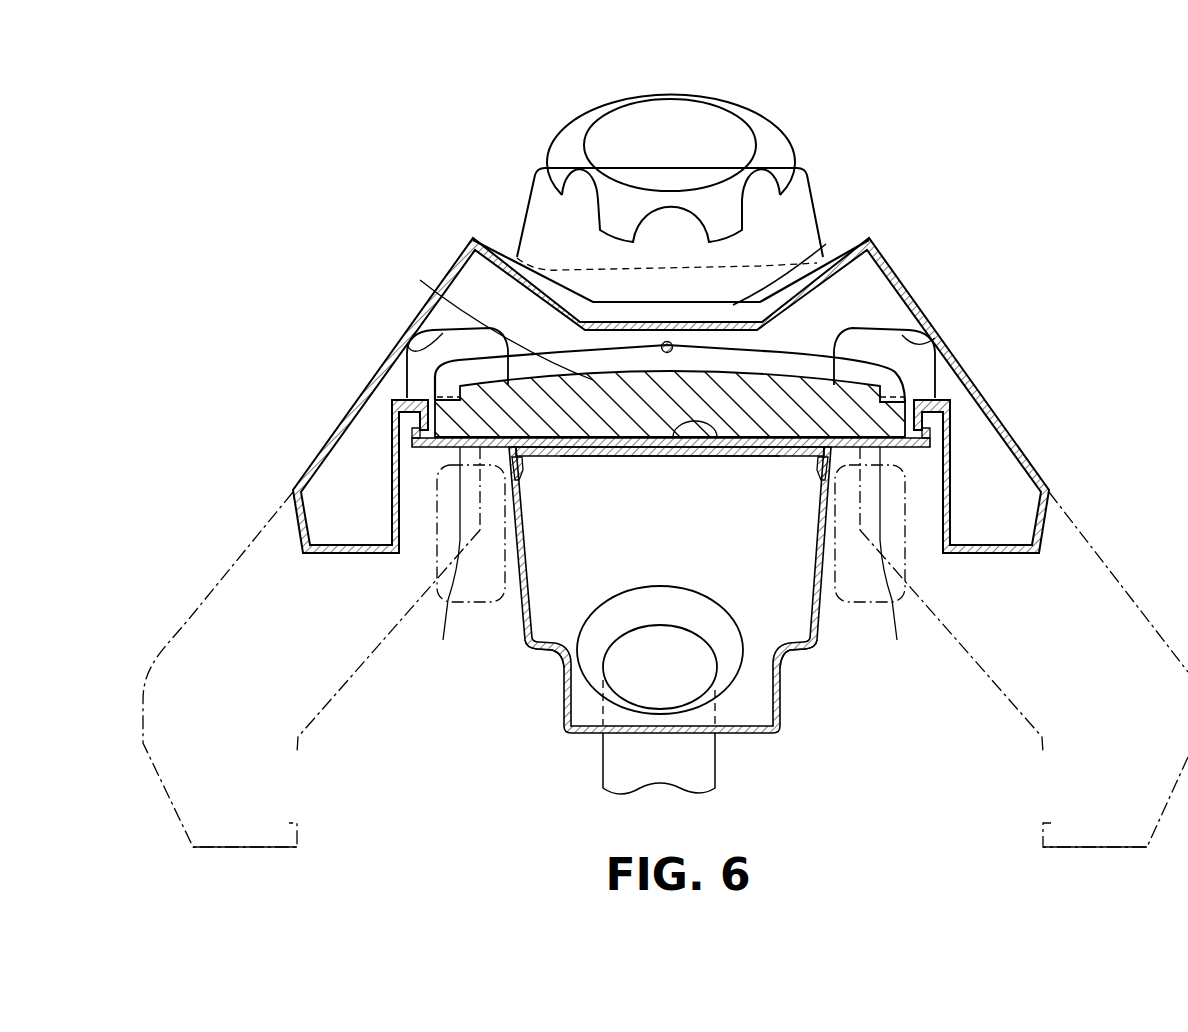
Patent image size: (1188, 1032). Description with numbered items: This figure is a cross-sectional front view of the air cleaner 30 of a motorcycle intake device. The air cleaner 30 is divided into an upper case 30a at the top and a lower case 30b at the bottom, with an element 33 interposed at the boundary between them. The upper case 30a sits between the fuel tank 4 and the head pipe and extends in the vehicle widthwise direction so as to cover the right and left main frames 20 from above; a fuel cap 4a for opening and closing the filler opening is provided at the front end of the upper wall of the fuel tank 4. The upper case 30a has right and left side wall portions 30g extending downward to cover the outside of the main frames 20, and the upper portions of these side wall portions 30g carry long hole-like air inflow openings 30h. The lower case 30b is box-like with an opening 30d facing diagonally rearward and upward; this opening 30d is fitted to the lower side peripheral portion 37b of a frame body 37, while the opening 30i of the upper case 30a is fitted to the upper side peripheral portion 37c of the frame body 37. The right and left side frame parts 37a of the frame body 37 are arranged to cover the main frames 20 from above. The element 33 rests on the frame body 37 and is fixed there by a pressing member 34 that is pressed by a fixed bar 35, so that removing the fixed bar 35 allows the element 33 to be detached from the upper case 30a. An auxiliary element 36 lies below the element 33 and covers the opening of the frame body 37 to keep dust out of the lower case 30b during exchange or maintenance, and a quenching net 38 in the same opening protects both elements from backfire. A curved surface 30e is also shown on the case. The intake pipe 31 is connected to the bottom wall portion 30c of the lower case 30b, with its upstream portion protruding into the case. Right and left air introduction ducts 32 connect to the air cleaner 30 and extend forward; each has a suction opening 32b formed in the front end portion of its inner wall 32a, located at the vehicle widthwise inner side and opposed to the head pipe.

The fuel tank 4 is at (810, 190).
The fuel cap 4a is at (733, 113).
The main frame 20 is at (443, 610).
The air cleaner 30 is at (993, 372).
The upper case 30a is at (888, 250).
The lower case 30b is at (818, 630).
The bottom wall portion 30c is at (735, 708).
The opening 30d is at (522, 478).
The curved surface 30e is at (735, 305).
The side wall portion 30g is at (293, 490).
The air inflow opening 30h is at (420, 350).
The opening 30i is at (407, 425).
The intake pipe 31 is at (603, 757).
The air introduction duct 32 is at (232, 553).
The inner wall 32a is at (330, 708).
The suction opening 32b is at (290, 815).
The element 33 is at (585, 385).
The pressing member 34 is at (800, 360).
The fixed bar 35 is at (670, 342).
The auxiliary element 36 is at (703, 432).
The frame body 37 is at (905, 452).
The side frame part 37a is at (671, 533).
The lower side peripheral portion 37b is at (518, 453).
The upper side peripheral portion 37c is at (413, 440).
The quenching net 38 is at (662, 456).